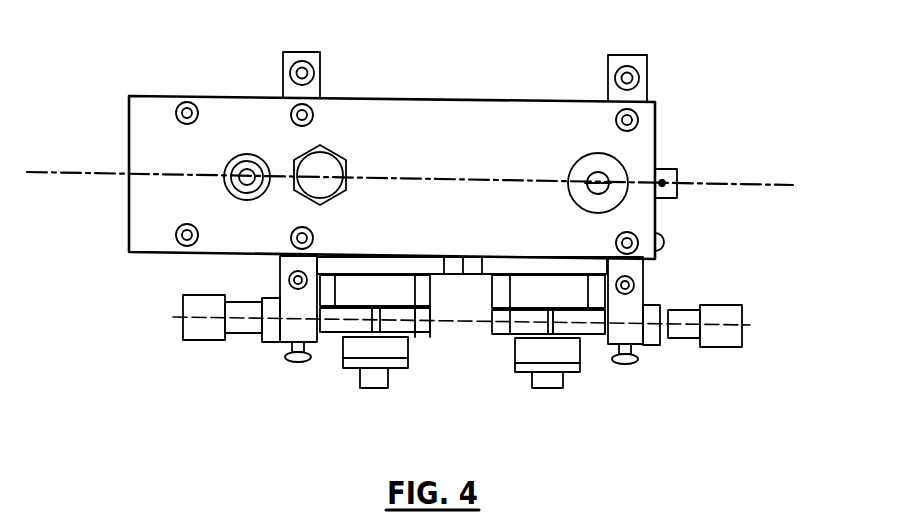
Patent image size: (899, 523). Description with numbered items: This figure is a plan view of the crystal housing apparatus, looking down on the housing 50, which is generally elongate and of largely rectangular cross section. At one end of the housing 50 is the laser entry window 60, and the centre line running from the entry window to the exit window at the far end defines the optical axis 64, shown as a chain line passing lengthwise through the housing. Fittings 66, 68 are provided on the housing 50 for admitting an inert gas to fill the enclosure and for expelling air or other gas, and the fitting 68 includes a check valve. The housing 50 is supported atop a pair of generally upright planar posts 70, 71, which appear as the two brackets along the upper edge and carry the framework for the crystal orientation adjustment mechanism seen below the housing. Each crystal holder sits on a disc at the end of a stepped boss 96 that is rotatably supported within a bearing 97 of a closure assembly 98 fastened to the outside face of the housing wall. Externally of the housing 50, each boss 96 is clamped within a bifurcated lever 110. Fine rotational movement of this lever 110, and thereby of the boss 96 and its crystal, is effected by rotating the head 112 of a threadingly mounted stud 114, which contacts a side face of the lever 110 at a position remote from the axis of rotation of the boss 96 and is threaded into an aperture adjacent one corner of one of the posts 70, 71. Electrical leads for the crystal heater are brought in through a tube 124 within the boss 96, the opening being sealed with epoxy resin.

The housing 50 is at (450, 128).
The laser entry window 60 is at (640, 115).
The optical axis 64 is at (45, 173).
The fitting 66 is at (623, 166).
The fitting 68 is at (334, 151).
The post 70 is at (302, 52).
The post 71 is at (628, 55).
The stepped boss 96 is at (573, 353).
The bearing 97 is at (527, 293).
The closure assembly 98 is at (610, 281).
The bifurcated lever 110 is at (502, 337).
The head 112 is at (720, 347).
The stud 114 is at (663, 347).
The tube 124 is at (551, 390).